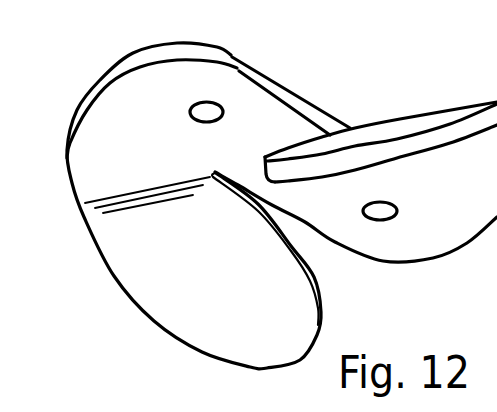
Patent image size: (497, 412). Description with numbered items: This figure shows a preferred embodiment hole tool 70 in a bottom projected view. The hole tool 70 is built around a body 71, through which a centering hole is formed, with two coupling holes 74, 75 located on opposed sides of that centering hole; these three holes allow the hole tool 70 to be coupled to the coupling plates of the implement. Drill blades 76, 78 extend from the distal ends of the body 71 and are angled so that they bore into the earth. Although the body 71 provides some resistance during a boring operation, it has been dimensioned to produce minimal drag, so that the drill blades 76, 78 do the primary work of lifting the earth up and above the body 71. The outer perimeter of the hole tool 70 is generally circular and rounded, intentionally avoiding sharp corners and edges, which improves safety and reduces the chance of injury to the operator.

The hole tool 70 is at (263, 194).
The body 71 is at (237, 92).
The coupling hole 74 is at (378, 221).
The coupling hole 75 is at (190, 113).
The drill blade 76 is at (233, 300).
The drill blade 78 is at (379, 95).